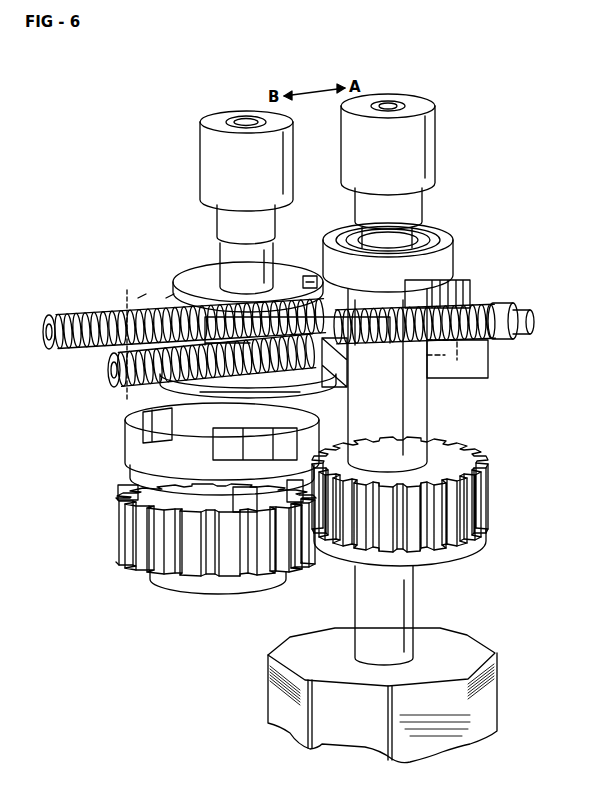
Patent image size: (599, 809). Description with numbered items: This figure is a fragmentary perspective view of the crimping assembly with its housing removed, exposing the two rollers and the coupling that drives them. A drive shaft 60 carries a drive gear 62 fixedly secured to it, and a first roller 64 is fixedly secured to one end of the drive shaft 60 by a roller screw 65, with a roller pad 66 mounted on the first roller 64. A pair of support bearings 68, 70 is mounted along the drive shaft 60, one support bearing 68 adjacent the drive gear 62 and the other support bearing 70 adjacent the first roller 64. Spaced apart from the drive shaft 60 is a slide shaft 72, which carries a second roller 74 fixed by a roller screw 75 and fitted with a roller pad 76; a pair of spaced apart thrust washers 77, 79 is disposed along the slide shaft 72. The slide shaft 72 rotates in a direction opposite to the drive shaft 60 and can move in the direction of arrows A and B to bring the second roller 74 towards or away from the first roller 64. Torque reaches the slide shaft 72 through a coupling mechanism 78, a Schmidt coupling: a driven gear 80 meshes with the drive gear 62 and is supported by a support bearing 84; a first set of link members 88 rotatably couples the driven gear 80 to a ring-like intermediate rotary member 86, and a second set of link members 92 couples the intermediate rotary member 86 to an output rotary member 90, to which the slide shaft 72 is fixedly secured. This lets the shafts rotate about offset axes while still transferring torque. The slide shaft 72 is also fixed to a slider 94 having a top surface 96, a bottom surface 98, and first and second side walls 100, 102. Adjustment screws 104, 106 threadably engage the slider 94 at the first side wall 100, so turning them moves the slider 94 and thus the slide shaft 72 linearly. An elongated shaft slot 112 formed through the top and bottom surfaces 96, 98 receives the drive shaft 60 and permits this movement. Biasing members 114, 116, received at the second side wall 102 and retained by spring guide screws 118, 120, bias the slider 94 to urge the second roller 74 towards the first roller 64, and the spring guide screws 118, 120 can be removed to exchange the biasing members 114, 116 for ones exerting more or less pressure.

The drive shaft 60 is at (427, 400).
The drive gear 62 is at (472, 503).
The first roller 64 is at (422, 206).
The roller screw 65 is at (391, 100).
The roller pad 66 is at (436, 158).
The support bearing 68 is at (452, 550).
The support bearing 70 is at (452, 252).
The slide shaft 72 is at (221, 250).
The second roller 74 is at (216, 215).
The roller screw 75 is at (246, 114).
The roller pad 76 is at (203, 140).
The thrust washer 77 is at (205, 272).
The coupling mechanism 78 is at (122, 444).
The thrust washer 79 is at (351, 420).
The driven gear 80 is at (122, 534).
The support bearing 84 is at (152, 582).
The intermediate rotary member 86 is at (130, 470).
The first set of link members 88 is at (140, 492).
The output rotary member 90 is at (163, 399).
The second set of link members 92 is at (123, 432).
The slider 94 is at (140, 300).
The top surface 96 is at (168, 300).
The bottom surface 98 is at (450, 382).
The first side wall 100 is at (508, 374).
The second side wall 102 is at (127, 290).
The adjustment screw 104 is at (508, 310).
The adjustment screw 106 is at (462, 278).
The elongated shaft slot 112 is at (316, 270).
The biasing member 114 is at (62, 316).
The biasing member 116 is at (124, 388).
The spring guide screw 118 is at (40, 330).
The spring guide screw 120 is at (108, 366).